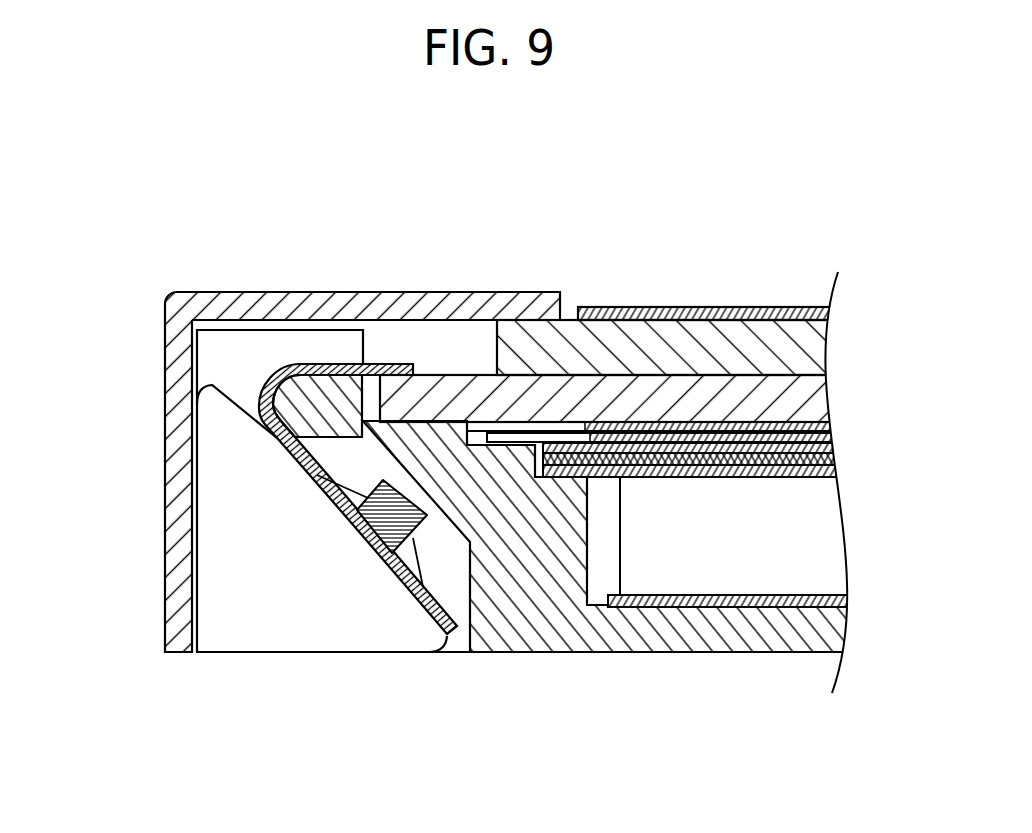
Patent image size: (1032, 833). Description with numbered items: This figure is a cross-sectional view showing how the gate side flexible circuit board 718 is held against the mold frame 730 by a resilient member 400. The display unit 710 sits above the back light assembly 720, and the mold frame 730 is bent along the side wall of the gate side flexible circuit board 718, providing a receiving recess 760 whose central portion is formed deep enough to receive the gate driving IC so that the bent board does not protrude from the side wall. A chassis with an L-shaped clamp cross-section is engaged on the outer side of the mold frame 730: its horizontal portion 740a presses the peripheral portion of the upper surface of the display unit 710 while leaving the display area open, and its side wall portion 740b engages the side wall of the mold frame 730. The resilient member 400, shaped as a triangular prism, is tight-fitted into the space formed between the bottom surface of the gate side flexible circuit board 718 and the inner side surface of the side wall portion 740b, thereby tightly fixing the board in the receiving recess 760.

The resilient member 400 is at (316, 636).
The display unit 710 is at (648, 290).
The gate side flexible circuit board 718 is at (267, 381).
The back light assembly 720 is at (855, 428).
The mold frame 730 is at (642, 653).
The horizontal portion 740a is at (497, 292).
The side wall portion 740b is at (175, 493).
The receiving recess 760 is at (446, 582).